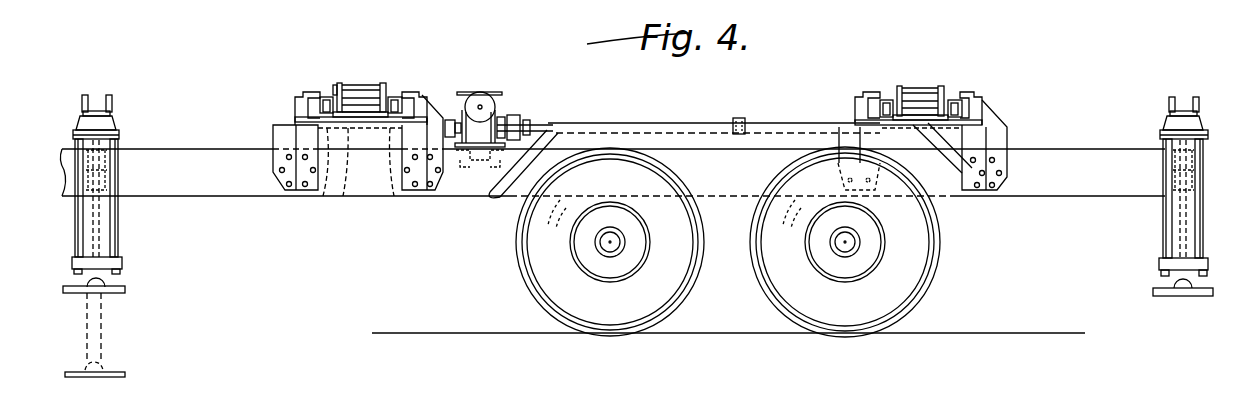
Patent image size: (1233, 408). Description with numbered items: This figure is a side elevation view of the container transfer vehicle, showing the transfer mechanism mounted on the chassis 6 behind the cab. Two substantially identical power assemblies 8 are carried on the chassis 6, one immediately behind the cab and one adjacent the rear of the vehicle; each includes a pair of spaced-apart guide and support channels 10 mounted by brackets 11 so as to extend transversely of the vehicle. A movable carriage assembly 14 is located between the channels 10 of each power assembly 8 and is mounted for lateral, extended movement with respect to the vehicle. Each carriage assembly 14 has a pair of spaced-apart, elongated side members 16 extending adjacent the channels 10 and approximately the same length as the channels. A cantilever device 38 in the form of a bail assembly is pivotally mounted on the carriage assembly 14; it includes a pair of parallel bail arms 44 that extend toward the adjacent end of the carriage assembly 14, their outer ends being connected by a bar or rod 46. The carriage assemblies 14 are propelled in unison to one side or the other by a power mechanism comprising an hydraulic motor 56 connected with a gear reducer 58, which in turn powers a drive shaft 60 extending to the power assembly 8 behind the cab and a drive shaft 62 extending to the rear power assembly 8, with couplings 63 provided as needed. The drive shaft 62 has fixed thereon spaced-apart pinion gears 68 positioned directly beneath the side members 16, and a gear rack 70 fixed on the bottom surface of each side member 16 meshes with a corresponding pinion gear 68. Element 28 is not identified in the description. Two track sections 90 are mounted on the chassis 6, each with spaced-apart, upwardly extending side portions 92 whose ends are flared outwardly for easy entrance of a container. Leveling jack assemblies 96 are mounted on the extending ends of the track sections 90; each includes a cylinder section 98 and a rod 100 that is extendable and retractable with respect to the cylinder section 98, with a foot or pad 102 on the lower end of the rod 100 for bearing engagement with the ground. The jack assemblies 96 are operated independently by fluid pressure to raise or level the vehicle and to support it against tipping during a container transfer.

The chassis 6 is at (198, 196).
The power assembly 8 is at (436, 100).
The guide and support channel 10 is at (983, 102).
The bracket 11 is at (273, 135).
The carriage assembly 14 is at (384, 83).
The side member 16 is at (322, 97).
The bracket 28 is at (422, 95).
The cantilever device 38 is at (920, 85).
The bail arm 44 is at (336, 86).
The bar or rod 46 is at (358, 84).
The hydraulic motor 56 is at (345, 83).
The gear reducer 58 is at (492, 125).
The drive shaft 60 is at (355, 175).
The drive shaft 62 is at (549, 124).
The coupling 63 is at (740, 118).
The pinion gear 68 is at (350, 175).
The gear rack 70 is at (300, 100).
The track section 90 is at (107, 93).
The side portion 92 is at (84, 98).
The leveling jack assembly 96 is at (119, 237).
The cylinder section 98 is at (103, 208).
The rod 100 is at (104, 318).
The foot or pad 102 is at (118, 371).